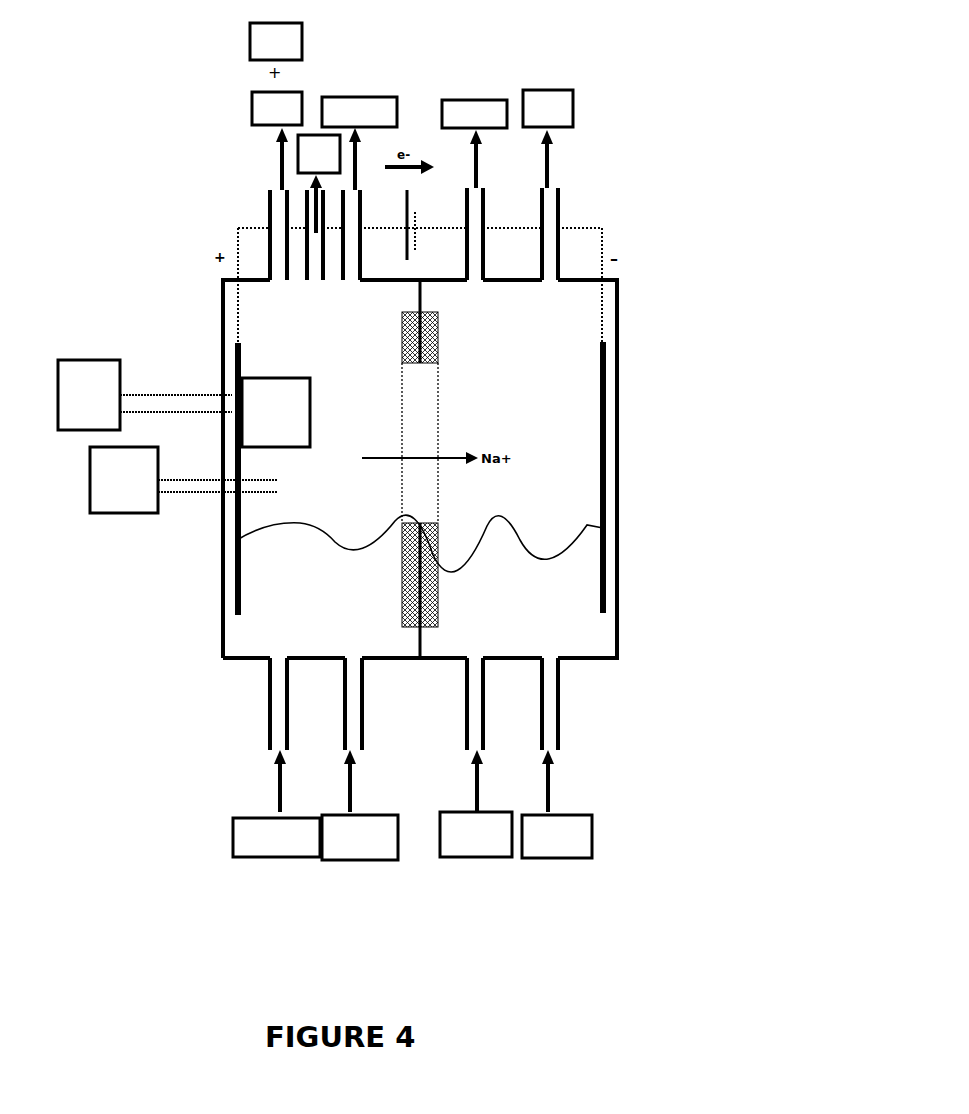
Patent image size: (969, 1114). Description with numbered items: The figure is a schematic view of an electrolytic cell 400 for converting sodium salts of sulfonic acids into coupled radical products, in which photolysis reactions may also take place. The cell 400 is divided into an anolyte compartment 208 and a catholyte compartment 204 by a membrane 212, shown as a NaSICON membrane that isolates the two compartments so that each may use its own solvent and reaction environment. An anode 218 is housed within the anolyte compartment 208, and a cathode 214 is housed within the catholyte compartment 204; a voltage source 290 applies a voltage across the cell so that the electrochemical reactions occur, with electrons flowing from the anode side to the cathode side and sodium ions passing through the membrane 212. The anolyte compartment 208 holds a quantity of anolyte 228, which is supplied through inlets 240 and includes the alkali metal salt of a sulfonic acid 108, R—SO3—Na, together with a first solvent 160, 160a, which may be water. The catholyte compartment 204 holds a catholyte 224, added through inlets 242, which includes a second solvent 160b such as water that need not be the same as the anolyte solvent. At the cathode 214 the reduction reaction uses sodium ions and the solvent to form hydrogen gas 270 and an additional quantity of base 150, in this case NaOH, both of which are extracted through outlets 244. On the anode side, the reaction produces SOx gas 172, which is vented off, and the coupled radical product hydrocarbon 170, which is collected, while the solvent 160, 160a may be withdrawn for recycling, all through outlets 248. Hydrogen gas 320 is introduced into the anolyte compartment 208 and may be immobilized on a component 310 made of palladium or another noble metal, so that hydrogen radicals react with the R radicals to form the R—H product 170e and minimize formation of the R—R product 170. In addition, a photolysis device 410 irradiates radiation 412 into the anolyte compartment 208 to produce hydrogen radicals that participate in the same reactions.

The cell 400 is at (128, 303).
The membrane 212 is at (417, 300).
The outlets 248 is at (287, 273).
The outlets 244 is at (560, 215).
The voltage source 290 is at (435, 203).
The R—H product 170e is at (250, 38).
The hydrocarbon 170 is at (253, 109).
The SOx gas 172 is at (317, 133).
The first solvent 160 is at (360, 482).
The first solvent 160a is at (351, 97).
The base 150 is at (479, 99).
The hydrogen gas 270 is at (574, 112).
The component 310 is at (272, 412).
The anode 218 is at (246, 588).
The cathode 214 is at (603, 473).
The hydrogen gas 320 is at (58, 429).
The photolysis device 410 is at (117, 513).
The radiation 412 is at (200, 493).
The catholyte compartment 204 is at (538, 406).
The anolyte compartment 208 is at (375, 506).
The anolyte 228 is at (335, 608).
The catholyte 224 is at (540, 608).
The inlets 240 is at (268, 700).
The inlets 242 is at (517, 732).
The alkali metal salt of a sulfonic acid 108 is at (240, 858).
The second solvent 160b is at (543, 860).